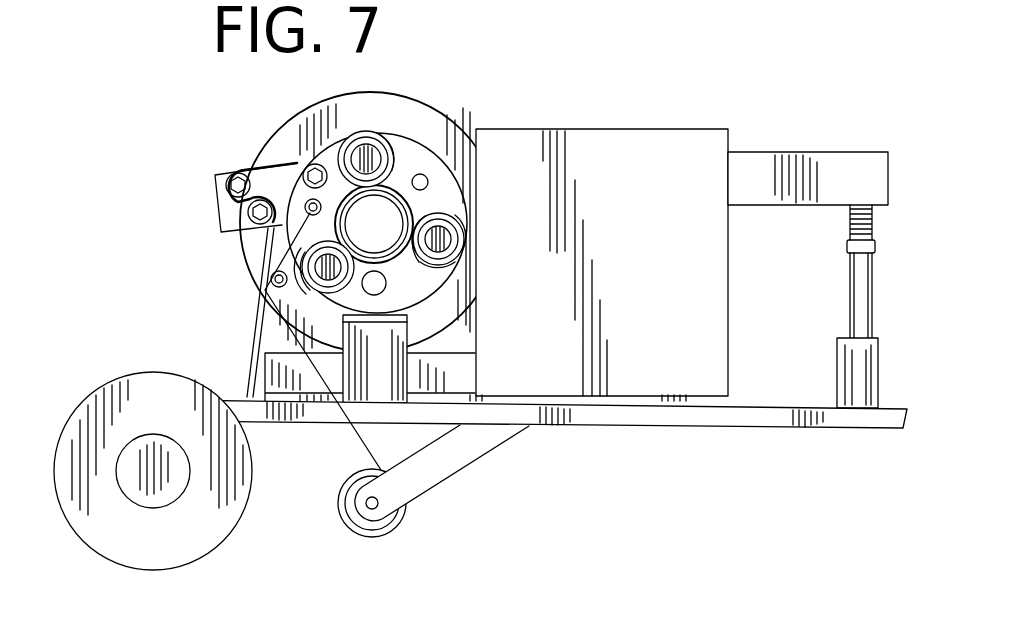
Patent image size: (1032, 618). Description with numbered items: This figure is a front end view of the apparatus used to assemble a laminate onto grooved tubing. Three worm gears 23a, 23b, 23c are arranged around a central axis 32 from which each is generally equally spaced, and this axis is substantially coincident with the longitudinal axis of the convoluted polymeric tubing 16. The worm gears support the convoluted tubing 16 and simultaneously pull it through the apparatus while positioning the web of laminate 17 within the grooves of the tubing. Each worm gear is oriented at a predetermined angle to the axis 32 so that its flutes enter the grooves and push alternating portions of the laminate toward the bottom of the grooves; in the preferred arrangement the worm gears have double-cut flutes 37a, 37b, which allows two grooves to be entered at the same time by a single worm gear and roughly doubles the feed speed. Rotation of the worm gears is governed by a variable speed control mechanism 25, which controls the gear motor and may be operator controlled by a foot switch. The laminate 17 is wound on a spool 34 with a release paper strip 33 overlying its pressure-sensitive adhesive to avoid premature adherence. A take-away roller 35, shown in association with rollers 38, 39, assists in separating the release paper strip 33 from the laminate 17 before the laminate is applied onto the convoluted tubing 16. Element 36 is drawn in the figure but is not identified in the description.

The convoluted polymeric tubing 16 is at (389, 261).
The web of laminate 17 is at (257, 330).
The worm gear 23a is at (380, 133).
The worm gear 23b is at (462, 237).
The worm gear 23c is at (306, 242).
The variable speed control mechanism 25 is at (665, 227).
The axis 32 is at (383, 222).
The release paper strip 33 is at (398, 540).
The spool 34 is at (172, 542).
The take-away roller 35 is at (352, 513).
The pivot pin 36 is at (306, 167).
The double-cut flute 37a is at (458, 222).
The double-cut flute 37b is at (452, 265).
The roller 38 is at (298, 203).
The roller 39 is at (271, 284).